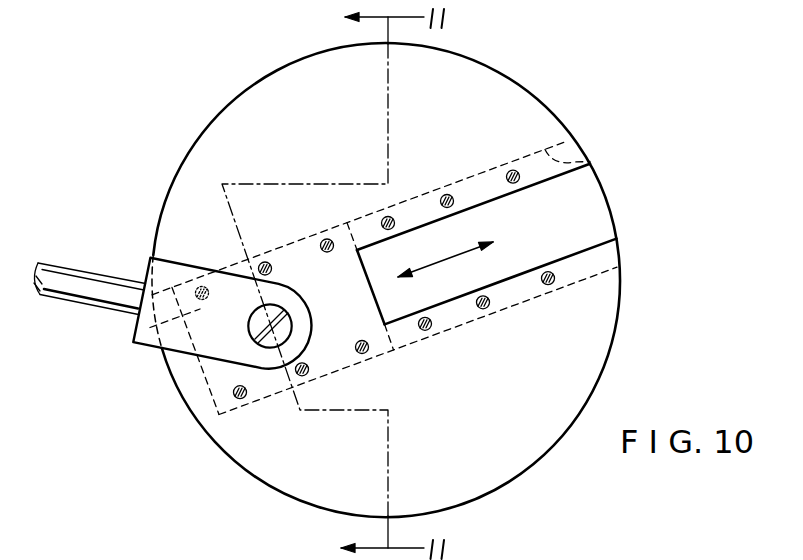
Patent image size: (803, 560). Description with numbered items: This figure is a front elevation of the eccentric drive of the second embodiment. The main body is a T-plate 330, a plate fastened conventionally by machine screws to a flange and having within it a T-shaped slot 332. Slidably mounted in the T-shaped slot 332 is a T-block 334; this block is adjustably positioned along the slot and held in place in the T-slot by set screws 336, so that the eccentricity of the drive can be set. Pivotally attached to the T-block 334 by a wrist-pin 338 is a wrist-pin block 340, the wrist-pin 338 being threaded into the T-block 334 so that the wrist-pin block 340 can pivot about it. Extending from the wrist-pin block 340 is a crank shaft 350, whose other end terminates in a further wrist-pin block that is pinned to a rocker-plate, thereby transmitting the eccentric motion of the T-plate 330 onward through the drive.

The T-plate 330 is at (493, 103).
The T-shaped slot 332 is at (590, 162).
The T-block 334 is at (366, 336).
The set screws 336 is at (381, 224).
The wrist-pin 338 is at (297, 311).
The wrist-pin block 340 is at (233, 338).
The crank shaft 350 is at (100, 287).